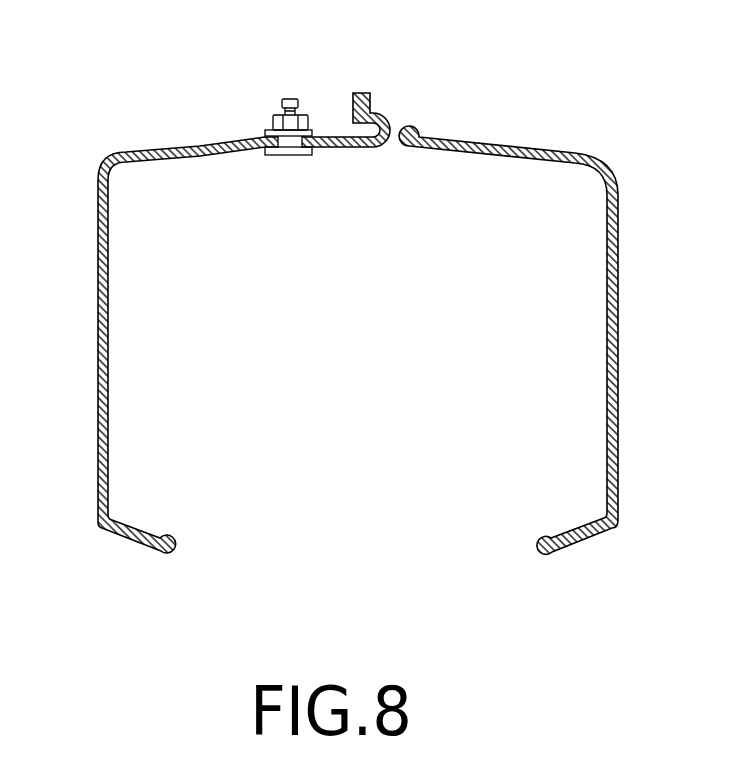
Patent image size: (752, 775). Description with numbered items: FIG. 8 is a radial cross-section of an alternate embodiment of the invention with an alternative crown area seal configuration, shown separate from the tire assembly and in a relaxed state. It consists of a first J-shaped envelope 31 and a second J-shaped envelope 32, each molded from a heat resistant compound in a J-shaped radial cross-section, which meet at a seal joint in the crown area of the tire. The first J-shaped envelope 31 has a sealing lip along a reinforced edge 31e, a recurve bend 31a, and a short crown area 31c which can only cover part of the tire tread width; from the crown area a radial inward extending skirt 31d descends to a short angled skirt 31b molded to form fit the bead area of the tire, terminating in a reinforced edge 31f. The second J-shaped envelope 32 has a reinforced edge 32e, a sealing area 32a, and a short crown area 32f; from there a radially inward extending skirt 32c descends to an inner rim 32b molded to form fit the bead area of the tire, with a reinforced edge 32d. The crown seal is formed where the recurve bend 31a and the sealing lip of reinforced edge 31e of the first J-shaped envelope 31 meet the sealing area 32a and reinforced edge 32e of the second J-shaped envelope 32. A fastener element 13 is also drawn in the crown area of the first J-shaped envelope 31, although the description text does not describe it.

The bolt 13 is at (290, 98).
The first J-shaped envelope 31 is at (100, 212).
The recurve bend 31a is at (390, 149).
The short angled skirt 31b is at (130, 530).
The short crown area 31c is at (185, 147).
The radial inward extending skirt 31d is at (98, 312).
The reinforced edge 31e is at (361, 92).
The reinforced edge 31f is at (170, 533).
The second J-shaped envelope 32 is at (618, 245).
The sealing area 32a is at (430, 150).
The inner rim 32b is at (585, 530).
The radially inward extending skirt 32c is at (618, 338).
The reinforced edge 32d is at (543, 536).
The reinforced edge 32e is at (412, 127).
The short crown area 32f is at (490, 137).